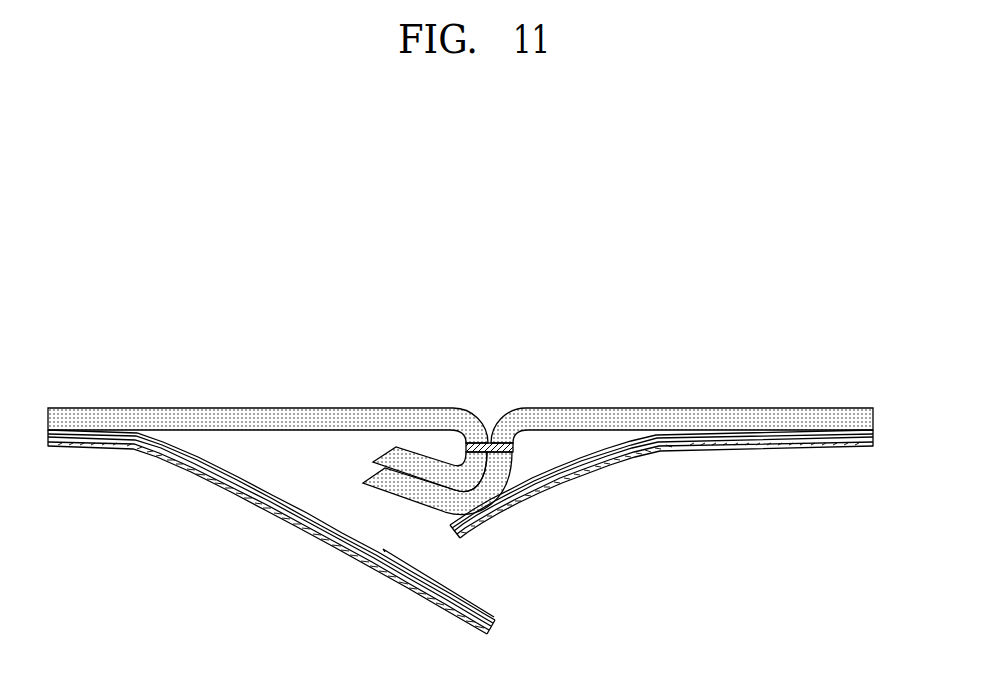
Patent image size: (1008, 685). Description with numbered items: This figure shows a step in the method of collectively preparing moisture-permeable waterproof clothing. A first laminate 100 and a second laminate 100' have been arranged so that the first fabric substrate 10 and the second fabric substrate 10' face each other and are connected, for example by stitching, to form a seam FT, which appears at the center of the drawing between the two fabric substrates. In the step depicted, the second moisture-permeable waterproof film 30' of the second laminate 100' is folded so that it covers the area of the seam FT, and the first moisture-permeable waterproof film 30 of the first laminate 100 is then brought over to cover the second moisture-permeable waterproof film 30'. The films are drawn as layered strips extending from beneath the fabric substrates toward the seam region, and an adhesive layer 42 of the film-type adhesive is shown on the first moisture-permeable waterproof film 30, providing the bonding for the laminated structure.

The first fabric substrate 10 is at (268, 397).
The second fabric substrate 10' is at (682, 397).
The seam FT is at (488, 452).
The first moisture-permeable waterproof film 30 is at (271, 532).
The second moisture-permeable waterproof film 30' is at (661, 484).
The adhesive layer 42 is at (475, 602).
The first laminate 100 is at (299, 492).
The second laminate 100' is at (661, 460).